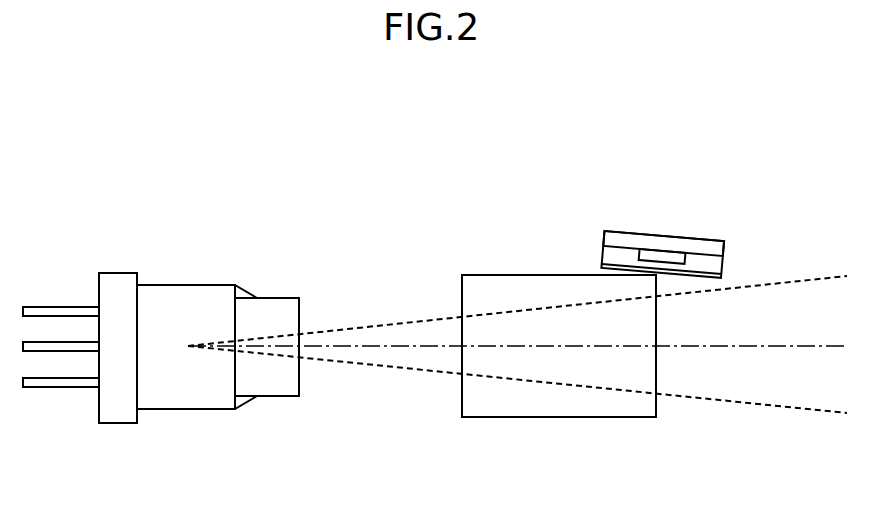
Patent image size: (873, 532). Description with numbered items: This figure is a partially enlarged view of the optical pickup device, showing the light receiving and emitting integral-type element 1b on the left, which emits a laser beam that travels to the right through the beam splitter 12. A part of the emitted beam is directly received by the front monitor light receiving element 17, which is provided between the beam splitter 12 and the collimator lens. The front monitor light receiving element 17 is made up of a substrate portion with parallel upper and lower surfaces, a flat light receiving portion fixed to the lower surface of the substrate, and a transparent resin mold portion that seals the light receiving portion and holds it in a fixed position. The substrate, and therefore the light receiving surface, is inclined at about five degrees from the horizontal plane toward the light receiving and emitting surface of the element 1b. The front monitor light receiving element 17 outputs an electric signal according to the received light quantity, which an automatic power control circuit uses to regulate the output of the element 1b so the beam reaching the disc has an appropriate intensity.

The light receiving and emitting integral-type element 1b is at (120, 423).
The beam splitter 12 is at (495, 417).
The front monitor light receiving element 17 is at (713, 198).